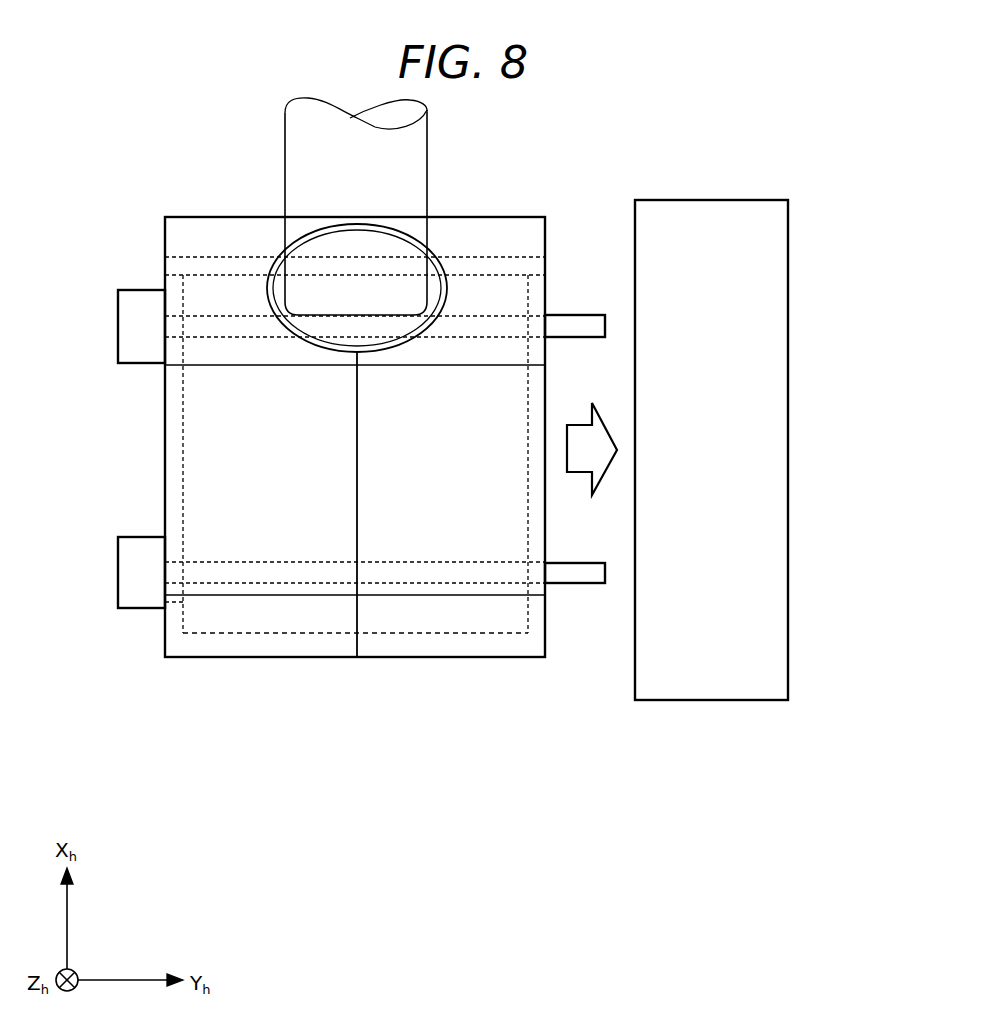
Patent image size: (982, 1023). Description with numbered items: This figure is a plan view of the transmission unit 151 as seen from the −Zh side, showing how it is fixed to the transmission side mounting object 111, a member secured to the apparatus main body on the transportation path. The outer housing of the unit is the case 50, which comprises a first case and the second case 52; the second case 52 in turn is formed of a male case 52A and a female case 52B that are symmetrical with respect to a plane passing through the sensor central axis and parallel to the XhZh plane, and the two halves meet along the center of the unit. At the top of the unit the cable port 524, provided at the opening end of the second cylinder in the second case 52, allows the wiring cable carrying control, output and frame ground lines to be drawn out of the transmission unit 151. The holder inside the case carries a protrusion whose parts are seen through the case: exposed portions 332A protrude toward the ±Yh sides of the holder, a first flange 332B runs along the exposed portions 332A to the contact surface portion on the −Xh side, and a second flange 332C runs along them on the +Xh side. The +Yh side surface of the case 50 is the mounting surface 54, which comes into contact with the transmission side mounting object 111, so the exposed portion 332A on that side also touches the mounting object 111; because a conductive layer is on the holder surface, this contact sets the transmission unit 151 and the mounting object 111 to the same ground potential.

The case 50 is at (165, 447).
The transmission unit 151 is at (149, 661).
The second case 52 is at (430, 748).
The male case 52A is at (265, 610).
The female case 52B is at (402, 610).
The cable port 524 is at (392, 285).
The exposed portion 332A is at (548, 485).
The first flange 332B is at (505, 662).
The second flange 332C is at (517, 263).
The mounting surface 54 is at (547, 627).
The transmission side mounting object 111 is at (788, 328).